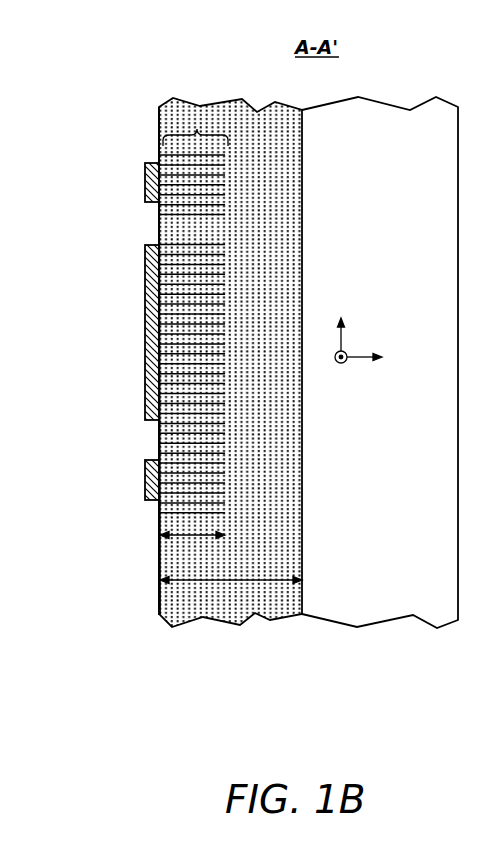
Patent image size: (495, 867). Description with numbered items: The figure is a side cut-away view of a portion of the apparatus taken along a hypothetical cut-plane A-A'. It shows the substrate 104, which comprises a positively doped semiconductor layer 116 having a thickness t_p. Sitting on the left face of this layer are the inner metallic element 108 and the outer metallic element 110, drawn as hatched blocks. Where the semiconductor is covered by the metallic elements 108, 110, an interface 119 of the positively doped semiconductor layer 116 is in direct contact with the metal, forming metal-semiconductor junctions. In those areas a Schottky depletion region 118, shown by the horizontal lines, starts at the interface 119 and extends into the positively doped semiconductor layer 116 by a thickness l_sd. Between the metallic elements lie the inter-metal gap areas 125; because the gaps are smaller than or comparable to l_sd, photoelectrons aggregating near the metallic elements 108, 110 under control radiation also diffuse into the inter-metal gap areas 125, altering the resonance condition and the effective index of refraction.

The substrate 104 is at (260, 394).
The positively doped semiconductor layer 116 is at (182, 368).
The Schottky depletion region 118 is at (197, 129).
The interface 119 is at (159, 123).
The outer metallic element 110 is at (145, 185).
The inner metallic element 108 is at (145, 379).
The inter-metal gap areas 125 is at (137, 205).